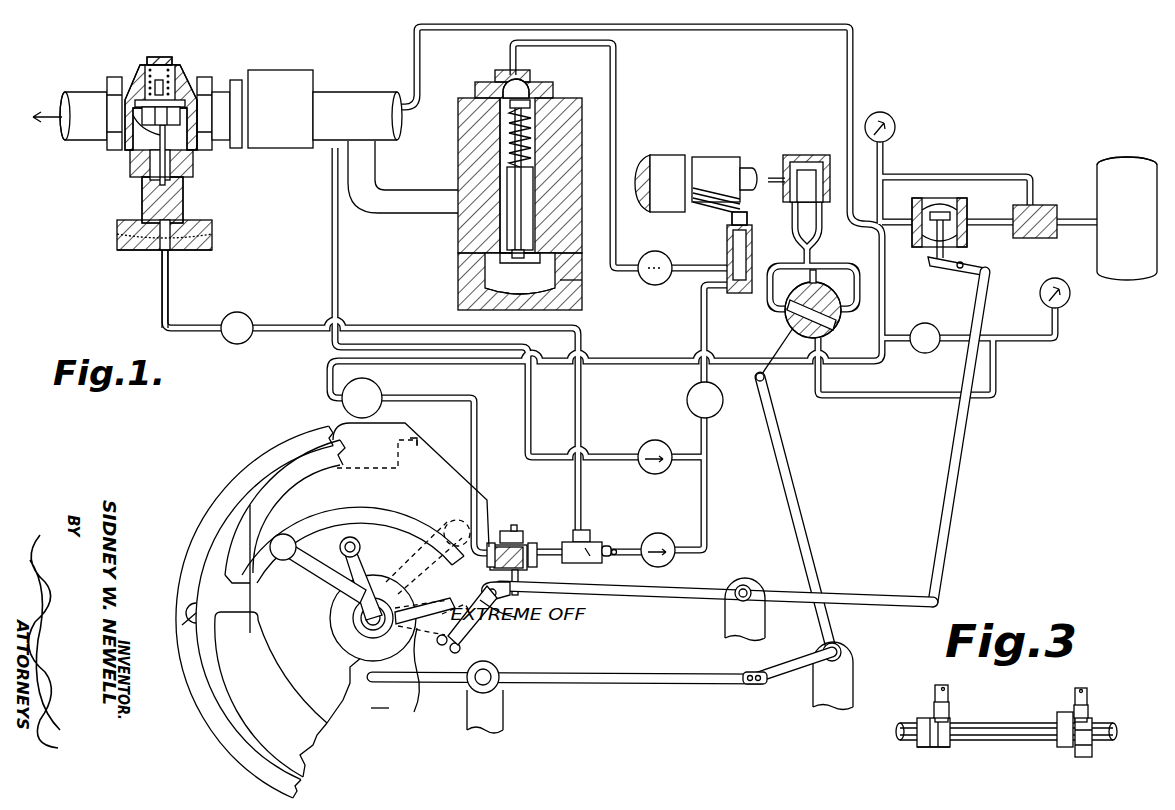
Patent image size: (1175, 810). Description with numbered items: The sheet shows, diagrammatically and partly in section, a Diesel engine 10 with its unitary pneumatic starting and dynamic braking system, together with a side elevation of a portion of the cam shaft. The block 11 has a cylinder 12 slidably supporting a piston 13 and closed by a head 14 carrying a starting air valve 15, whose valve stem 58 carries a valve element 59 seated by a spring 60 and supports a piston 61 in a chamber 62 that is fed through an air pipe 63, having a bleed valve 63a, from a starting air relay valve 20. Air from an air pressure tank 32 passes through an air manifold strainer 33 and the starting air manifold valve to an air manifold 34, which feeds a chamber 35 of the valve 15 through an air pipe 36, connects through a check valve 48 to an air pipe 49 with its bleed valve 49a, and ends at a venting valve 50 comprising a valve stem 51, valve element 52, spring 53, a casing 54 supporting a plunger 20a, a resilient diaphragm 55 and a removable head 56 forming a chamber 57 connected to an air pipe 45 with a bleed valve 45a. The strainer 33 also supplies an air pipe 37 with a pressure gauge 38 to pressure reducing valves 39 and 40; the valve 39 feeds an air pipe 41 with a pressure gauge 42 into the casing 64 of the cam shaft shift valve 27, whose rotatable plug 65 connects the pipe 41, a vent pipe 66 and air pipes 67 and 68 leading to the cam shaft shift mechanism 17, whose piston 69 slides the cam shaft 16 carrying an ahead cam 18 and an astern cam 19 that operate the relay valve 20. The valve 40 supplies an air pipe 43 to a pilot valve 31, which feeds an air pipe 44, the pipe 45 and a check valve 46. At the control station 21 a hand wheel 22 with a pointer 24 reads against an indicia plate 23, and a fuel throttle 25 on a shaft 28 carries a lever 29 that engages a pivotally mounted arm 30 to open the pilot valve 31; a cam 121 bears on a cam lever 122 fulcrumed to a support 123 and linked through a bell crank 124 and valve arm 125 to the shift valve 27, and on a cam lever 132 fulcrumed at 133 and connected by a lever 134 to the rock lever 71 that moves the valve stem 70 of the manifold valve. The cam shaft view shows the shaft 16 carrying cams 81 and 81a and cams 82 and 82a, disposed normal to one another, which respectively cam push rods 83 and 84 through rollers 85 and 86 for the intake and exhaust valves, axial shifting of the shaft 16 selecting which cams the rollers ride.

In FIG. 1, the Diesel engine 10 is at (449, 243).
In FIG. 1, the block 11 is at (458, 282).
In FIG. 1, the cylinder 12 is at (570, 290).
In FIG. 1, the piston 13 is at (517, 290).
In FIG. 1, the head 14 is at (545, 100).
In FIG. 1, the starting air valve 15 is at (522, 198).
In FIG. 1, the cam shaft 16 is at (672, 155).
In FIG. 3, the cam shaft 16 is at (903, 743).
In FIG. 1, the cam shaft shift mechanism 17 is at (806, 155).
In FIG. 1, the ahead cam 18 is at (722, 206).
In FIG. 1, the astern cam 19 is at (708, 157).
In FIG. 1, the starting air relay valve 20 is at (727, 246).
In FIG. 1, the plunger 20a is at (748, 232).
In FIG. 1, the control station 21 is at (411, 566).
In FIG. 1, the hand wheel 22 is at (236, 706).
In FIG. 1, the indicia plate 23 is at (202, 712).
In FIG. 1, the pointer 24 is at (182, 625).
In FIG. 1, the fuel throttle 25 is at (405, 556).
In FIG. 1, the cam shaft shift valve 27 is at (802, 308).
In FIG. 1, the shaft 28 is at (373, 631).
In FIG. 1, the lever 29 is at (341, 548).
In FIG. 1, the pivotally mounted arm 30 is at (474, 624).
In FIG. 1, the pilot valve 31 is at (522, 540).
In FIG. 1, the air pressure tank 32 is at (1117, 225).
In FIG. 1, the air manifold strainer 33 is at (1045, 206).
In FIG. 1, the air manifold 34 is at (370, 90).
In FIG. 1, the chamber 35 is at (533, 182).
In FIG. 1, the air pipe 36 is at (420, 190).
In FIG. 1, the air pipe 37 is at (918, 176).
In FIG. 1, the pressure gauge 38 is at (896, 124).
In FIG. 1, the pressure reducing valve 39 is at (930, 323).
In FIG. 1, the pressure reducing valve 40 is at (342, 398).
In FIG. 1, the air pipe 41 is at (903, 398).
In FIG. 1, the pressure gauge 42 is at (1071, 298).
In FIG. 1, the air pipe 43 is at (478, 468).
In FIG. 1, the air pipe 44 is at (564, 563).
In FIG. 1, the air pipe 45 is at (582, 411).
In FIG. 1, the bleed valve 45a is at (238, 340).
In FIG. 1, the check valve 46 is at (655, 566).
In FIG. 1, the check valve 48 is at (648, 474).
In FIG. 1, the air pipe 49 is at (710, 290).
In FIG. 1, the bleed valve 49a is at (687, 398).
In FIG. 1, the venting valve 50 is at (122, 187).
In FIG. 1, the valve stem 51 is at (135, 140).
In FIG. 1, the valve element 52 is at (176, 95).
In FIG. 1, the spring 53 is at (135, 60).
In FIG. 1, the casing 54 is at (185, 200).
In FIG. 1, the resilient diaphragm 55 is at (190, 240).
In FIG. 1, the removable head 56 is at (145, 250).
In FIG. 1, the chamber 57 is at (160, 262).
In FIG. 1, the valve stem 58 is at (528, 222).
In FIG. 1, the valve element 59 is at (545, 262).
In FIG. 1, the spring 60 is at (531, 140).
In FIG. 1, the piston 61 is at (498, 128).
In FIG. 1, the chamber 62 is at (530, 104).
In FIG. 1, the air pipe 63 is at (618, 92).
In FIG. 1, the bleed valve 63a is at (656, 283).
In FIG. 1, the casing 64 is at (835, 328).
In FIG. 1, the plug 65 is at (792, 318).
In FIG. 1, the vent pipe 66 is at (817, 277).
In FIG. 1, the air pipe 67 is at (852, 264).
In FIG. 1, the air pipe 68 is at (781, 266).
In FIG. 1, the piston 69 is at (807, 240).
In FIG. 1, the valve stem 70 is at (948, 257).
In FIG. 1, the rock lever 71 is at (938, 268).
In FIG. 3, the cam 81 is at (1093, 748).
In FIG. 3, the cam 81a is at (1060, 712).
In FIG. 3, the cam 82 is at (950, 738).
In FIG. 3, the cam 82a is at (925, 748).
In FIG. 3, the push rod 83 is at (1087, 692).
In FIG. 3, the push rod 84 is at (935, 693).
In FIG. 3, the roller 85 is at (1088, 710).
In FIG. 3, the roller 86 is at (949, 709).
In FIG. 1, the cam 121 is at (416, 712).
In FIG. 1, the cam lever 122 is at (598, 683).
In FIG. 1, the support 123 is at (505, 728).
In FIG. 1, the bell crank 124 is at (797, 500).
In FIG. 1, the valve arm 125 is at (778, 375).
In FIG. 1, the cam lever 132 is at (700, 600).
In FIG. 1, the fulcrum 133 is at (727, 635).
In FIG. 1, the lever 134 is at (967, 420).